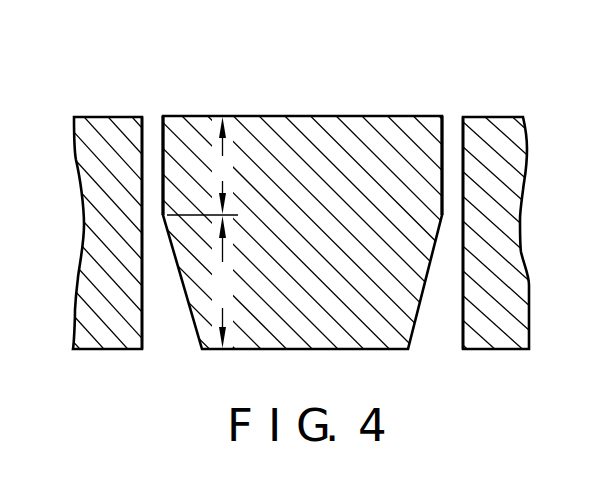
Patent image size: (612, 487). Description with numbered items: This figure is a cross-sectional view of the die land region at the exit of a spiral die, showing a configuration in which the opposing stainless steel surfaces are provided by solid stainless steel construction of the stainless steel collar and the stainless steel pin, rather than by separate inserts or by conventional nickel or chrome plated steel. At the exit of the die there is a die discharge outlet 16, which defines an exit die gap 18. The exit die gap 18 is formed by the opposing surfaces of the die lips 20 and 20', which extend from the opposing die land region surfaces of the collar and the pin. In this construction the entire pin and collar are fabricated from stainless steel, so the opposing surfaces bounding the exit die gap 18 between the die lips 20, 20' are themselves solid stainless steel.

The die discharge outlet 16 is at (145, 102).
The exit die gap 18 is at (153, 121).
The die lip 20 is at (306, 217).
The die lip 20' is at (306, 213).